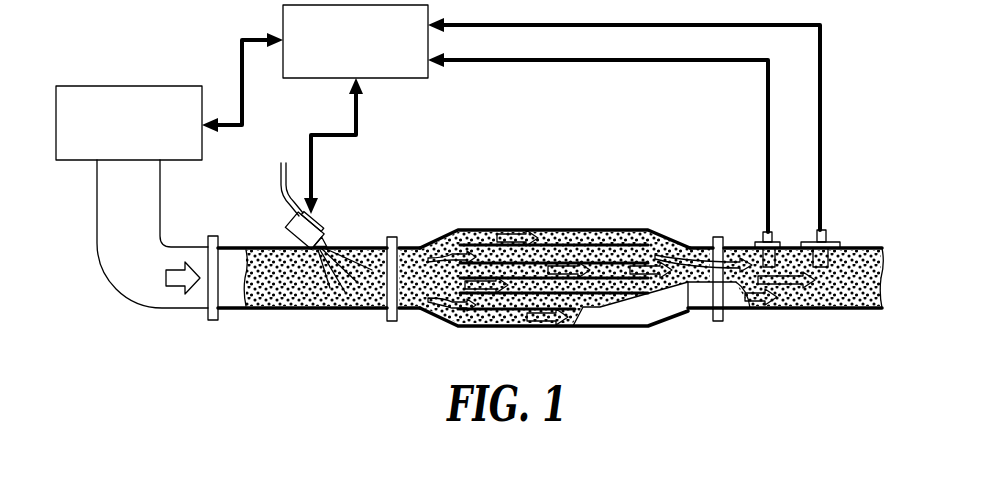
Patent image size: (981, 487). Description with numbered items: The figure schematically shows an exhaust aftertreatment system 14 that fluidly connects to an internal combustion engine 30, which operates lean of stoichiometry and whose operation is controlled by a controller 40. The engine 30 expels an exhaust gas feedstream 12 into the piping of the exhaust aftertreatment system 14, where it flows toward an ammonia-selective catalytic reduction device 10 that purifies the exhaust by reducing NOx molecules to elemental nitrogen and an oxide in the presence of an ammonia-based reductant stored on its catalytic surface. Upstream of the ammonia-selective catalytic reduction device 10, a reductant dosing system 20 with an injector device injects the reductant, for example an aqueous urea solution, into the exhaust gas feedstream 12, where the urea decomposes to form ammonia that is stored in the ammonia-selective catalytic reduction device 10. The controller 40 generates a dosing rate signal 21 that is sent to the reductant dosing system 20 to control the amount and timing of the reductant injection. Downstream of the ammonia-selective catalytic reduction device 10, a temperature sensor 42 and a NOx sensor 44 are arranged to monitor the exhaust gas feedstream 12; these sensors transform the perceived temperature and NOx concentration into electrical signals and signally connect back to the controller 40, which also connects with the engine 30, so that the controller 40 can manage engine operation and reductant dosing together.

The ammonia-selective catalytic reduction device 10 is at (562, 231).
The exhaust gas feedstream 12 is at (158, 280).
The exhaust aftertreatment system 14 is at (204, 316).
The reductant dosing system 20 is at (322, 232).
The dosing rate signal 21 is at (345, 134).
The internal combustion engine 30 is at (143, 139).
The controller 40 is at (371, 58).
The temperature sensor 42 is at (762, 242).
The NOx sensor 44 is at (830, 238).